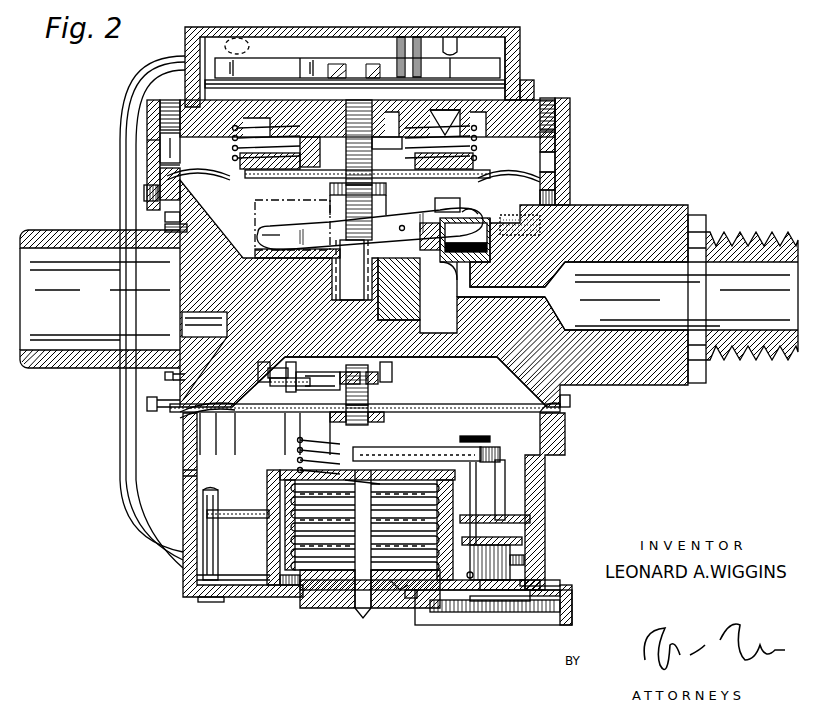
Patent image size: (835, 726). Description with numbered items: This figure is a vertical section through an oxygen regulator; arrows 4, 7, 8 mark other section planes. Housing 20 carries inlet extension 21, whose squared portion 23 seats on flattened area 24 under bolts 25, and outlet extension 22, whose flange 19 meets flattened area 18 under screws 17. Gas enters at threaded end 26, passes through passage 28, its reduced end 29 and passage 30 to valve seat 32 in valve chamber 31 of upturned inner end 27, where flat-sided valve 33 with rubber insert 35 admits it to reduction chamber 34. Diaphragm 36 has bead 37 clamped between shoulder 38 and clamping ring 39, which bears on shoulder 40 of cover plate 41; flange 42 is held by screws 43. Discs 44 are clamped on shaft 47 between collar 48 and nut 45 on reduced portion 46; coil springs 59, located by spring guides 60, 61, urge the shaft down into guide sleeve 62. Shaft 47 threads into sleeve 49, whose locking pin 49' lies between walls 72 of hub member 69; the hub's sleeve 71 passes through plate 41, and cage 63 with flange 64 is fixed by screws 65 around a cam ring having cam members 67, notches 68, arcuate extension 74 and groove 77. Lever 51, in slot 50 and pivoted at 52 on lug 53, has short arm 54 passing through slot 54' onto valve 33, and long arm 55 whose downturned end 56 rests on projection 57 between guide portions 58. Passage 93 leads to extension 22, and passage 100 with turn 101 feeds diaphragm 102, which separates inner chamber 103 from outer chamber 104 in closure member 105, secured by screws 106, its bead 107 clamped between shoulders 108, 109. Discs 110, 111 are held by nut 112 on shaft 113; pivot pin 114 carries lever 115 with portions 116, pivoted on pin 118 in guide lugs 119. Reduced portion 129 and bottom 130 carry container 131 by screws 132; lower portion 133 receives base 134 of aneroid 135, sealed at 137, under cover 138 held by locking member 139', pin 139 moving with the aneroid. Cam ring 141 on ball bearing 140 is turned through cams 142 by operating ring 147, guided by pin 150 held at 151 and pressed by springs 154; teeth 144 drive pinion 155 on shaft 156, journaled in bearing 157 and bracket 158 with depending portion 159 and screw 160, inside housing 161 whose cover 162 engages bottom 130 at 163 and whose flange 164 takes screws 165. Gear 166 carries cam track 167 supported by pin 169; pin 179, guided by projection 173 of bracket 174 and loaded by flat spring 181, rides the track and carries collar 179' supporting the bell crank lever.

The section line 4 is at (438, 20).
The section line 7 is at (96, 385).
The section line 8 is at (75, 420).
The screws 17 is at (165, 376).
The flattened area 18 is at (165, 229).
The lateral integral flange 19 is at (165, 217).
The annular housing 20 is at (560, 185).
The inlet extension 21 is at (692, 207).
The tubular outlet extension 22 is at (52, 236).
The squared central portion 23 is at (645, 215).
The flattened area 24 is at (560, 205).
The bolts 25 is at (706, 232).
The threaded end 26 is at (760, 232).
The inner end 27 is at (470, 340).
The large passage 28 is at (755, 350).
The tapered reduced end 29 is at (570, 280).
The smaller passage 30 is at (500, 292).
The circular valve chamber 31 is at (478, 230).
The valve seat 32 is at (457, 278).
The valve 33 is at (555, 178).
The reduction chamber 34 is at (555, 147).
The hard rubber base insert 35 is at (470, 262).
The diaphragm 36 is at (568, 110).
The triangular bead 37 is at (560, 160).
The annular shoulder 38 is at (160, 182).
The clamping ring 39 is at (158, 156).
The shoulder 40 is at (165, 142).
The cover plate 41 is at (182, 58).
The vertical flange 42 is at (165, 162).
The screws 43 is at (145, 195).
The discs 44 is at (232, 178).
The nut 45 is at (400, 146).
The reduced portion 46 is at (372, 150).
The reciprocating metal shaft 47 is at (375, 188).
The collar 48 is at (330, 190).
The vertically movable metal sleeve 49 is at (427, 44).
The locking pin 49' is at (513, 54).
The slot 50 is at (354, 242).
The lever 51 is at (302, 215).
The pivot 52 is at (404, 225).
The lug 53 is at (399, 289).
The short arm 54 is at (477, 198).
The vertical slot 54' is at (435, 197).
The long arm 55 is at (318, 226).
The downturned end 56 is at (262, 236).
The lateral projection 57 is at (262, 254).
The guide portions 58 is at (260, 218).
The coil springs 59 is at (232, 146).
The circular spring guides 60 is at (238, 160).
The tubular spring guides 61 is at (232, 132).
The guide sleeve 62 is at (322, 290).
The annular cage 63 is at (530, 80).
The integral flange 64 is at (159, 145).
The screws 65 is at (557, 91).
The cam members 67 is at (462, 80).
The notches 68 is at (452, 52).
The hub member 69 is at (367, 118).
The central sleeve 71 is at (313, 152).
The vertical walls 72 is at (298, 60).
The arcuate extension 74 is at (255, 40).
The groove 77 is at (212, 33).
The passage 93 is at (180, 280).
The passage 100 is at (195, 324).
The angled turn 101 is at (255, 368).
The diaphragm 102 is at (250, 378).
The inner diaphragm chamber 103 is at (224, 420).
The outer diaphragm chamber 104 is at (190, 470).
The closure member 105 is at (150, 470).
The screws 106 is at (150, 404).
The triangular bead 107 is at (560, 420).
The shoulder 108 is at (235, 406).
The shoulder 109 is at (155, 445).
The disc 110 is at (290, 413).
The smaller disc 111 is at (285, 390).
The nut 112 is at (385, 423).
The reciprocating metal shaft 113 is at (372, 396).
The pivot pin 114 is at (380, 379).
The lever 115 is at (318, 388).
The portions 116 is at (293, 370).
The pin 118 is at (270, 380).
The guide lugs 119 is at (275, 355).
The reduced lower portion 129 is at (530, 500).
The bottom 130 is at (270, 585).
The container 131 is at (290, 595).
The screws 132 is at (295, 600).
The lower portion 133 is at (312, 610).
The threaded base 134 is at (340, 612).
The aneroid 135 is at (282, 590).
The solder closure 137 is at (365, 620).
The cover 138 is at (272, 478).
The pin 139 is at (389, 461).
The spring wire locking member 139' is at (265, 519).
The ball bearing 140 is at (243, 630).
The cam ring 141 is at (248, 597).
The cams 142 is at (268, 534).
The teeth 144 is at (470, 530).
The cam operating ring 147 is at (252, 506).
The centering pin 150 is at (205, 565).
The pin mounting 151 is at (200, 603).
The coil springs 154 is at (345, 450).
The pinion 155 is at (520, 560).
The stub shaft 156 is at (412, 600).
The bearing 157 is at (505, 615).
The bearing bracket 158 is at (522, 540).
The depending portion 159 is at (480, 578).
The screw 160 is at (525, 558).
The small housing 161 is at (548, 625).
The integral cover 162 is at (560, 582).
The cover engagement 163 is at (535, 580).
The integral flange 164 is at (398, 598).
The screws 165 is at (410, 605).
The gear 166 is at (572, 608).
The cam track 167 is at (562, 593).
The pin 169 is at (468, 615).
The upper projection 173 is at (535, 470).
The bearing bracket 174 is at (520, 500).
The elongated pin 179 is at (493, 503).
The collar 179' is at (501, 464).
The flat spring 181 is at (478, 437).